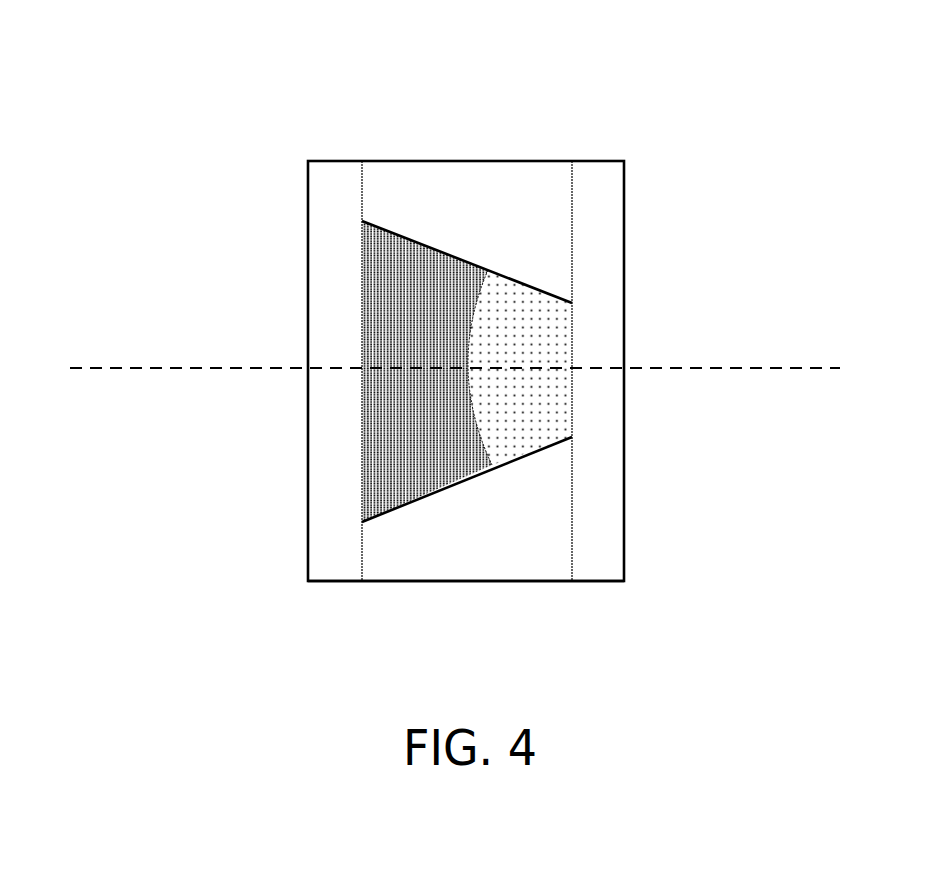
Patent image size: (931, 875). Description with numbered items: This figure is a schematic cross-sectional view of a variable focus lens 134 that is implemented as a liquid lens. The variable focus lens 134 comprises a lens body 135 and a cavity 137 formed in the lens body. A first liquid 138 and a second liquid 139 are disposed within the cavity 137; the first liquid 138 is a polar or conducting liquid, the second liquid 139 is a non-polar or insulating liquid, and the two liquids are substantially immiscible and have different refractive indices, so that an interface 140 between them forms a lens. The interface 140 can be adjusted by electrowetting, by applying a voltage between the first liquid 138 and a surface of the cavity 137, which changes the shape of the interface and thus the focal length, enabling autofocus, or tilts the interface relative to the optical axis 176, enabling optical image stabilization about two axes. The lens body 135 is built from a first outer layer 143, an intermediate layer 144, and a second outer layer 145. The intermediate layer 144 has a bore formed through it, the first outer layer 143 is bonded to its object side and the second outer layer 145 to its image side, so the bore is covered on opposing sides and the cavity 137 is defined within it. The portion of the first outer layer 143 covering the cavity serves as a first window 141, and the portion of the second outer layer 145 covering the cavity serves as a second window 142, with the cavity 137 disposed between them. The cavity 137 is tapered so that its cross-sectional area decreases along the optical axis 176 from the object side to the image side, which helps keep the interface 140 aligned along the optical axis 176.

The variable focus lens 134 is at (442, 293).
The lens body 135 is at (625, 147).
The cavity 137 is at (540, 275).
The first liquid 138 is at (389, 363).
The second liquid 139 is at (593, 324).
The interface 140 is at (384, 478).
The first window 141 is at (252, 371).
The second window 142 is at (670, 371).
The first outer layer 143 is at (257, 587).
The intermediate layer 144 is at (451, 608).
The second outer layer 145 is at (675, 582).
The optical axis 176 is at (435, 340).